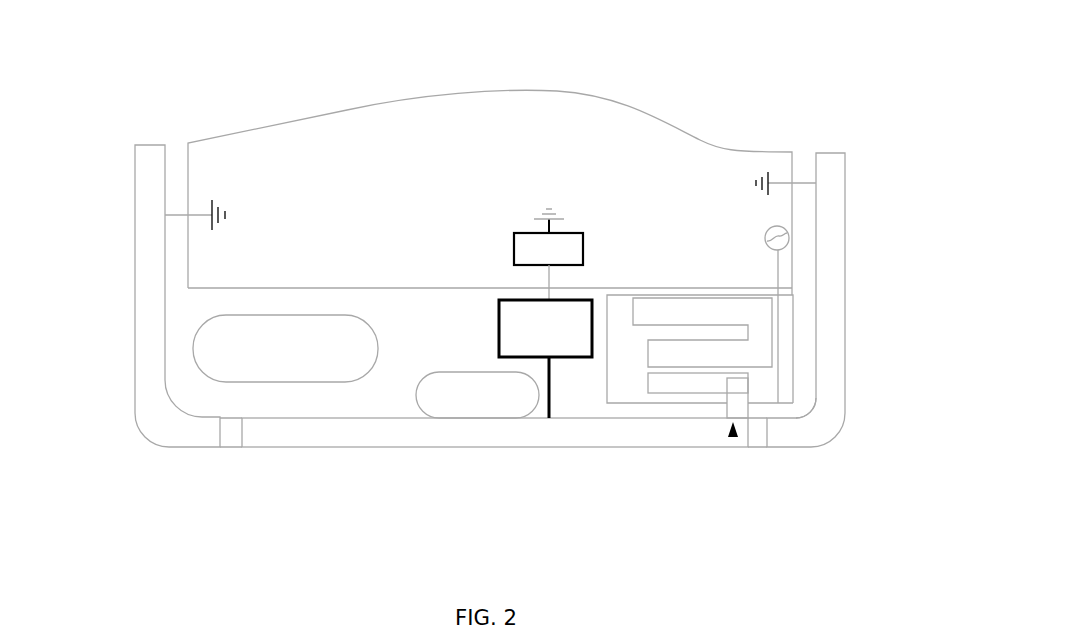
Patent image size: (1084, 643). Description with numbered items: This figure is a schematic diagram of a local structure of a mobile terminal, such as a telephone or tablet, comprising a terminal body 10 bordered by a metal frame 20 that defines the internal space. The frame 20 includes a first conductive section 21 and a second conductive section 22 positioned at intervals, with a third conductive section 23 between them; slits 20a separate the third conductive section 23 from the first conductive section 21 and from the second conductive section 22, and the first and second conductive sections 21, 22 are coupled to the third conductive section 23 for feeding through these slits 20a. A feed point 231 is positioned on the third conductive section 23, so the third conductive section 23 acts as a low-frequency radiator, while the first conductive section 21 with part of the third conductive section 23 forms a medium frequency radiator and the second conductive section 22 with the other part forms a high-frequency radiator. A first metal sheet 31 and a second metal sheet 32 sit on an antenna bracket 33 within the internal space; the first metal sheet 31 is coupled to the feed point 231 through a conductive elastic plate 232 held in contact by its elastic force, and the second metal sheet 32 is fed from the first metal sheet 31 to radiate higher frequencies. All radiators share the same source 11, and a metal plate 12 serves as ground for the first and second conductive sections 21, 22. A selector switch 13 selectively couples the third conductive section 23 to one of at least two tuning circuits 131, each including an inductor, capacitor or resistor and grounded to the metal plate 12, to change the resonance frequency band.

The terminal body 10 is at (637, 82).
The source 11 is at (790, 236).
The metal plate 12 is at (695, 161).
The selector switch 13 is at (583, 343).
The tuning circuit 131 is at (523, 230).
The frame 20 is at (862, 385).
The slit 20a is at (237, 433).
The first conductive section 21 is at (147, 193).
The second conductive section 22 is at (833, 256).
The third conductive section 23 is at (328, 447).
The feed point 231 is at (731, 437).
The elastic plate 232 is at (744, 408).
The first metal sheet 31 is at (710, 383).
The second metal sheet 32 is at (755, 329).
The antenna bracket 33 is at (794, 389).